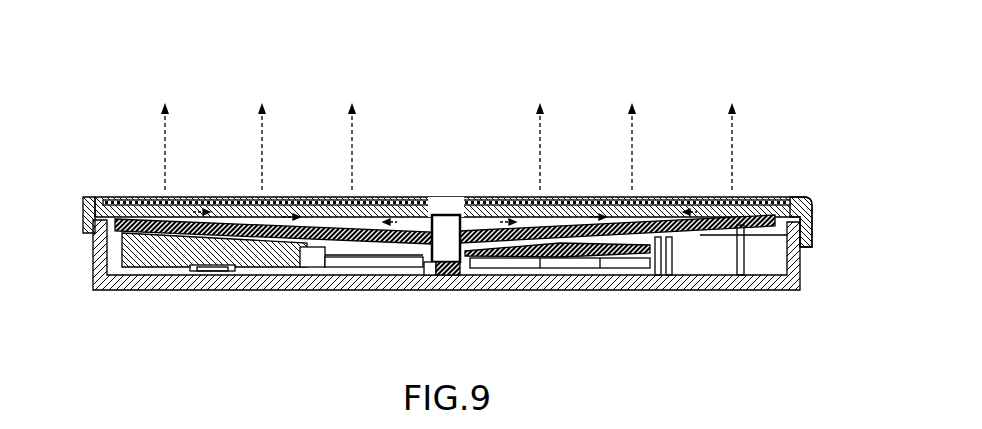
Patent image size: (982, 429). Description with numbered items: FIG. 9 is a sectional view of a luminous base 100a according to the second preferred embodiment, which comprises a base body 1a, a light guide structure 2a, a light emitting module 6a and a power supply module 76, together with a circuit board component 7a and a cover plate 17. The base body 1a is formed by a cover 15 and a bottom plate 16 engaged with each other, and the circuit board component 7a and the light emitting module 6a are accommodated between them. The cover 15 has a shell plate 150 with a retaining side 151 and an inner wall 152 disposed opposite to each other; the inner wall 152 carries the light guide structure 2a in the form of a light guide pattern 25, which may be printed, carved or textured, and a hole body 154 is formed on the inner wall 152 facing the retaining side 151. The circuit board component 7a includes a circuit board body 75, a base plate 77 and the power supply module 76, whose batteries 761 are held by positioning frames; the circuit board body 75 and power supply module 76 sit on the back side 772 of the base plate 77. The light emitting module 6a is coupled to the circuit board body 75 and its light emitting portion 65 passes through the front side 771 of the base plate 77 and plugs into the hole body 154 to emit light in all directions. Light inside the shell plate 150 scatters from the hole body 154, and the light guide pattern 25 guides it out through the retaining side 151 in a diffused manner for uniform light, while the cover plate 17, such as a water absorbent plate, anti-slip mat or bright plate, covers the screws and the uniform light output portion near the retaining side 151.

The luminous base 100a is at (431, 67).
The light guide structure 2a is at (650, 135).
The base body 1a is at (427, 280).
The cover 15 is at (83, 225).
The bottom plate 16 is at (185, 280).
The cover plate 17 is at (757, 197).
The shell plate 150 is at (660, 196).
The retaining side 151 is at (213, 207).
The inner wall 152 is at (798, 198).
The hole body 154 is at (433, 215).
The light emitting portion 65 is at (452, 223).
The light emitting module 6a is at (432, 276).
The circuit board component 7a is at (445, 253).
The circuit board body 75 is at (603, 268).
The power supply module 76 is at (214, 254).
The batteries 761 is at (235, 240).
The base plate 77 is at (200, 272).
The front side 771 is at (580, 226).
The back side 772 is at (655, 252).
The light guide pattern 25 is at (642, 228).